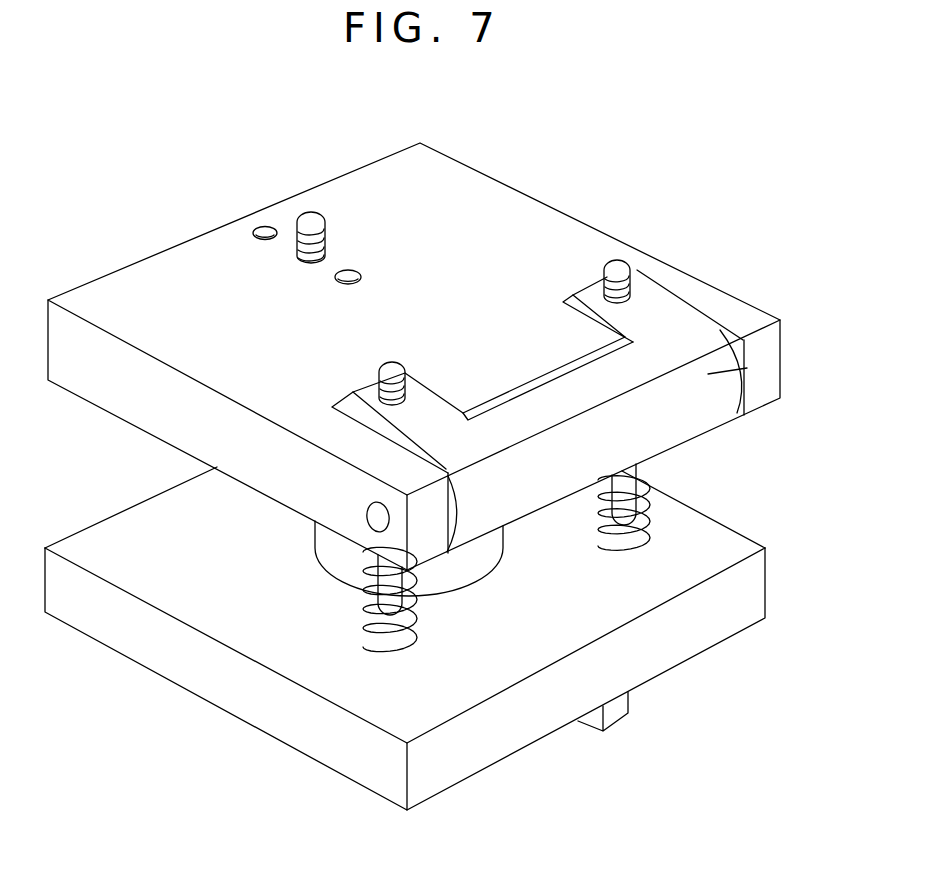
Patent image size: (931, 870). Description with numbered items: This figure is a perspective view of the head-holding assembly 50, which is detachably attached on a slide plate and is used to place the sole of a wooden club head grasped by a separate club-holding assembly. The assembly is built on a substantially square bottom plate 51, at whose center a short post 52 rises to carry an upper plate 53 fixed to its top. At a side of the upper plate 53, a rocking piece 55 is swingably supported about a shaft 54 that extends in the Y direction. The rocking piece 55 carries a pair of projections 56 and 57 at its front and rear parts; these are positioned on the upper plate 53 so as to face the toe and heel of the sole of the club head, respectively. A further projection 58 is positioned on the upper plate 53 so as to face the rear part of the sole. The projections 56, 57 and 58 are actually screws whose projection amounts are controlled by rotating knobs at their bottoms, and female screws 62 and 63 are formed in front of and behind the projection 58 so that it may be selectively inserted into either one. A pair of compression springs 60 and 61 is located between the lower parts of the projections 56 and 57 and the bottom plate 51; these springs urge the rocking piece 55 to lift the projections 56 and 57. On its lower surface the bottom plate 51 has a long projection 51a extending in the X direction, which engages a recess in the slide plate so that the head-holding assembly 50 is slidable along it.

The head-holding assembly 50 is at (655, 188).
The bottom plate 51 is at (712, 537).
The projection 51a is at (629, 713).
The short post 52 is at (336, 557).
The upper plate 53 is at (132, 283).
The shaft 54 is at (368, 511).
The rocking piece 55 is at (736, 368).
The projection 56 is at (398, 369).
The projection 57 is at (605, 268).
The projection 58 is at (318, 213).
The compression spring 60 is at (417, 631).
The compression spring 61 is at (648, 500).
The female screw 62 is at (357, 273).
The female screw 63 is at (268, 227).